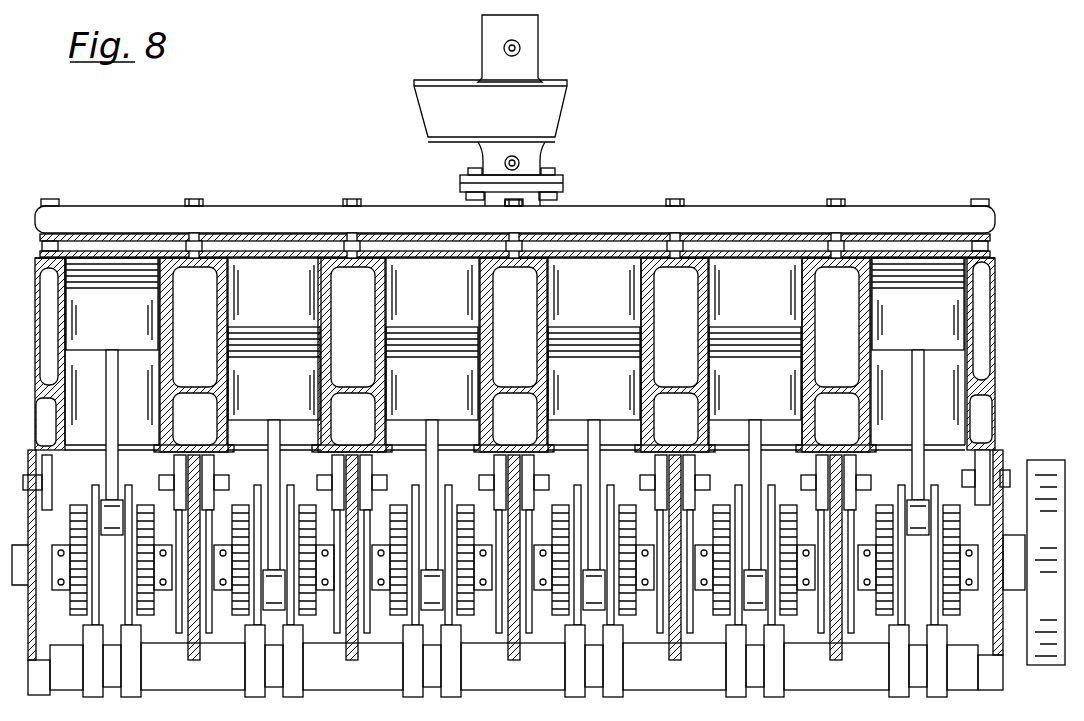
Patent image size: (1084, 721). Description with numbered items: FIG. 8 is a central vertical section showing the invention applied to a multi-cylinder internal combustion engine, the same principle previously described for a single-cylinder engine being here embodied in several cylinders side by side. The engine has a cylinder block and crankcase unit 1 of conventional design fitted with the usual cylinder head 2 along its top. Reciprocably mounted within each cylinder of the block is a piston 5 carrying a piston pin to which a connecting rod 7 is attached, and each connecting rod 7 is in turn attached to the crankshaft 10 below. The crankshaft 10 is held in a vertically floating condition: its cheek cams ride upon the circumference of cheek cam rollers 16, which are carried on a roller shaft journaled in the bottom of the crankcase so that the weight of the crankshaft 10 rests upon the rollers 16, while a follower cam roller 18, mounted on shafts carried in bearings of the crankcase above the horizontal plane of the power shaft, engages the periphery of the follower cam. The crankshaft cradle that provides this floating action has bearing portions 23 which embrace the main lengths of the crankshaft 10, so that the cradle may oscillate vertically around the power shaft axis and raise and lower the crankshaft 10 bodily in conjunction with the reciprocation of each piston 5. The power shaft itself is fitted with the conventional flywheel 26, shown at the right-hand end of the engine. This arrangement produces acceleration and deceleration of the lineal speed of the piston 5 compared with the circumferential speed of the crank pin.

The cylinder block and crankcase unit 1 is at (983, 480).
The cylinder head 2 is at (867, 213).
The piston 5 is at (101, 298).
The connecting rod 7 is at (915, 397).
The crankshaft 10 is at (932, 507).
The cheek cam rollers 16 is at (930, 657).
The follower cam roller 18 is at (1000, 462).
The bearing portions 23 is at (965, 558).
The flywheel 26 is at (1057, 455).